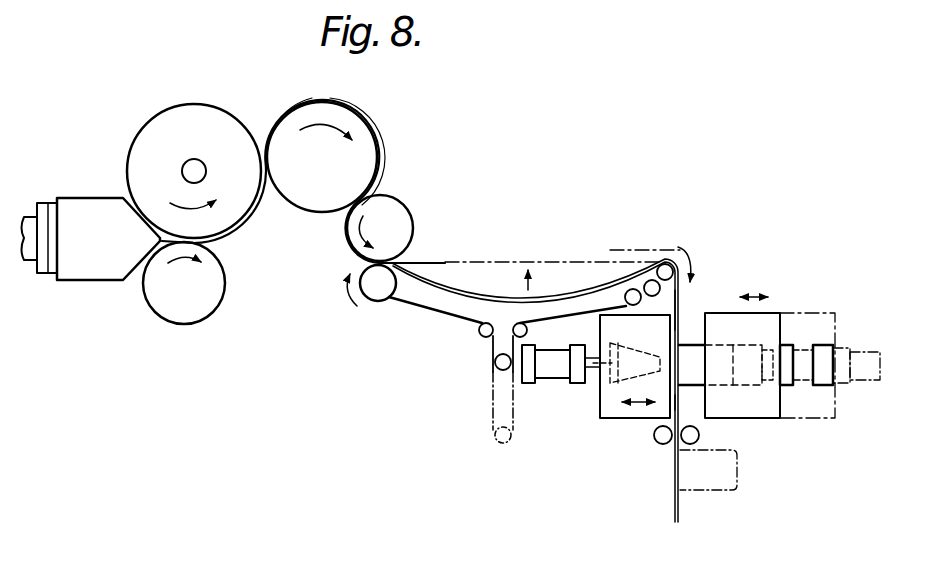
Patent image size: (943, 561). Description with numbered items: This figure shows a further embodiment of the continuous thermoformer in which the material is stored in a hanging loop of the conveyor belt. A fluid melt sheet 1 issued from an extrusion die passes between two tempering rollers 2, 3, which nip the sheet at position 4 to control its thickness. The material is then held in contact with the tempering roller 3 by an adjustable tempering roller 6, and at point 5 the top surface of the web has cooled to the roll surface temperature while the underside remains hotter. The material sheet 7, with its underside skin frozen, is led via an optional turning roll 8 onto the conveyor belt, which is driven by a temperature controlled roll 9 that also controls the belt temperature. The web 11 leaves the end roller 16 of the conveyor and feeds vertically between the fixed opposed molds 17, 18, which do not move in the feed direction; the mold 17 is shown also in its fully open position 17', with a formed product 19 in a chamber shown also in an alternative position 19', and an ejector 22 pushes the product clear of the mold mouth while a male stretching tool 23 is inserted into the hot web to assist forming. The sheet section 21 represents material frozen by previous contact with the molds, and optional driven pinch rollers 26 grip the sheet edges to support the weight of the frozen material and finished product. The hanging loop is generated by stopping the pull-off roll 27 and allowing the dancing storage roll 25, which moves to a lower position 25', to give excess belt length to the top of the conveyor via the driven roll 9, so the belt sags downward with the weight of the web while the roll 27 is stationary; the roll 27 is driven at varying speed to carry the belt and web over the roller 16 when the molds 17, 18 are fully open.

The fluid melt sheet 1 is at (163, 243).
The tempering roller 2 is at (170, 308).
The tempering roller 3 is at (180, 114).
The nip position 4 is at (223, 243).
The web point 5 is at (277, 118).
The adjustable tempering roller 6 is at (315, 110).
The material sheet 7 is at (378, 175).
The turning roll 8 is at (399, 215).
The temperature controlled roll 9 is at (370, 294).
The web 11 is at (688, 314).
The conveyor end roller 16 is at (663, 262).
The female mold 17 is at (756, 386).
The fully open mold position 17' is at (830, 394).
The opposed mold 18 is at (613, 412).
The formed product 19 is at (727, 318).
The chamber in displaced position 19' is at (709, 497).
The frozen sheet section 21 is at (683, 401).
The ejector 22 is at (765, 350).
The male stretching tool 23 is at (610, 384).
The dancing storage roll 25 is at (507, 363).
The guide roller in displaced position 25' is at (473, 435).
The driven pinch rollers 26 is at (683, 444).
The pull-off roll 27 is at (660, 272).